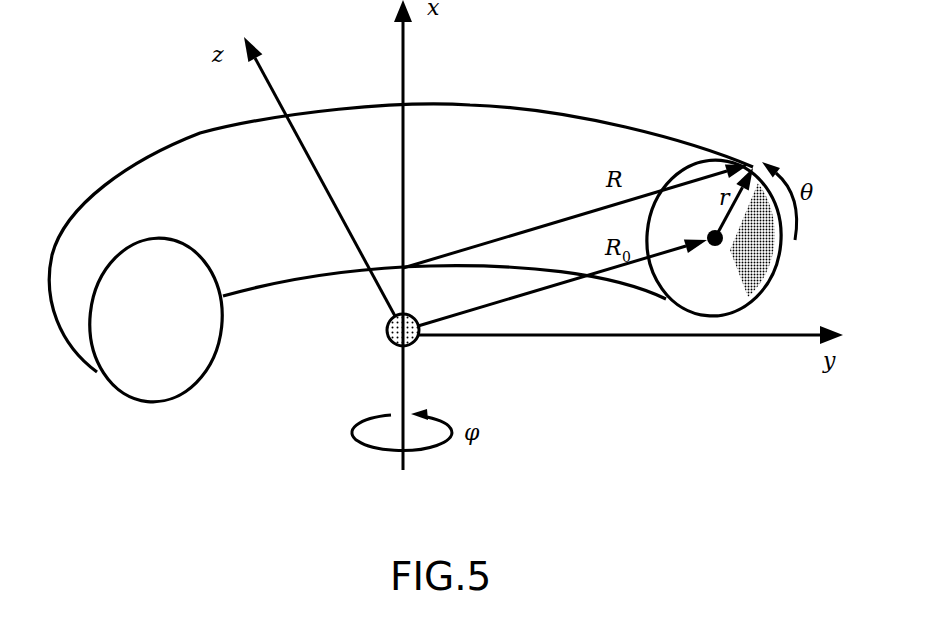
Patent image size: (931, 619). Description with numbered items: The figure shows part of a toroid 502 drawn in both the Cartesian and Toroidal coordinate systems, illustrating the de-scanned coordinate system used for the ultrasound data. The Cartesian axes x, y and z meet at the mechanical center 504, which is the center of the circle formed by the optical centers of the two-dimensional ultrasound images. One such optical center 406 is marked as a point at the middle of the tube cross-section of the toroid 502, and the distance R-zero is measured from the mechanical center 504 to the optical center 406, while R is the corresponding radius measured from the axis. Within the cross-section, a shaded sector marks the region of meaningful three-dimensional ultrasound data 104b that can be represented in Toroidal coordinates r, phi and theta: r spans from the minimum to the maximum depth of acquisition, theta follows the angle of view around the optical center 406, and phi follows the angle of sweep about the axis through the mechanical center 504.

The toroid 502 is at (133, 160).
The mechanical center 504 is at (388, 333).
The optical center 406 is at (710, 232).
The 3D ultrasound data 104b is at (777, 263).